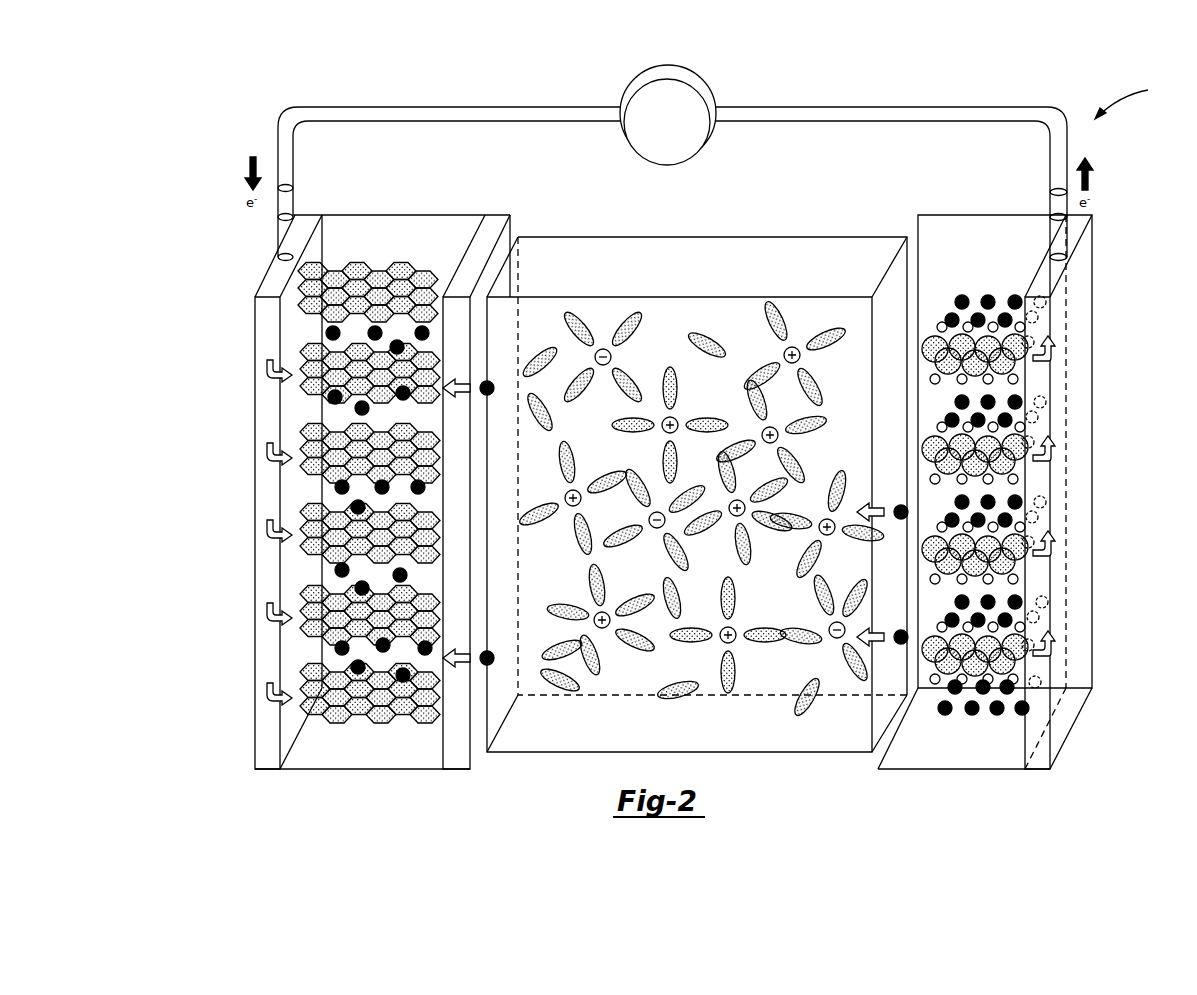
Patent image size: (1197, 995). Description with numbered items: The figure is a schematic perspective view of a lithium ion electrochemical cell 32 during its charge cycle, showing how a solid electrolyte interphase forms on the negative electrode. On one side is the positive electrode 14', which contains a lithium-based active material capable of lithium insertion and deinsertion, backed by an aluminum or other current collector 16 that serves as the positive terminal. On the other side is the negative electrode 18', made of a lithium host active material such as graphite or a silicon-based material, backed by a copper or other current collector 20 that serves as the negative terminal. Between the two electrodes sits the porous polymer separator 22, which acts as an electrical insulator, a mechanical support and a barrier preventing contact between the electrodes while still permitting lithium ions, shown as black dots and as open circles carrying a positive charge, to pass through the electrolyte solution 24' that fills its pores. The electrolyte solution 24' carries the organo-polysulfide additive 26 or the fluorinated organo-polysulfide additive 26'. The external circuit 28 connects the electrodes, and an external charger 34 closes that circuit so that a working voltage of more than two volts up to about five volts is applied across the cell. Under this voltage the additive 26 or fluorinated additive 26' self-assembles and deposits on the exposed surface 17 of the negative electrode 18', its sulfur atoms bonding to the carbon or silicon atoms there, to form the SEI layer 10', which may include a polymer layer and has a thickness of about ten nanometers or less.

The SEI layer 10' is at (647, 491).
The positive electrode 14' is at (985, 509).
The current collector 16 is at (1039, 770).
The exposed surface of the negative electrode 17 is at (487, 218).
The negative electrode 18' is at (382, 510).
The current collector 20 is at (272, 740).
The porous polymer separator 22 is at (697, 237).
The electrolyte solution 24' is at (701, 460).
The organo-polysulfide additive 26 is at (687, 361).
The fluorinated organo-polysulfide additive 26' is at (671, 653).
The external circuit 28 is at (518, 107).
The lithium ion electrochemical cell 32 is at (1134, 98).
The external charger 34 is at (711, 92).